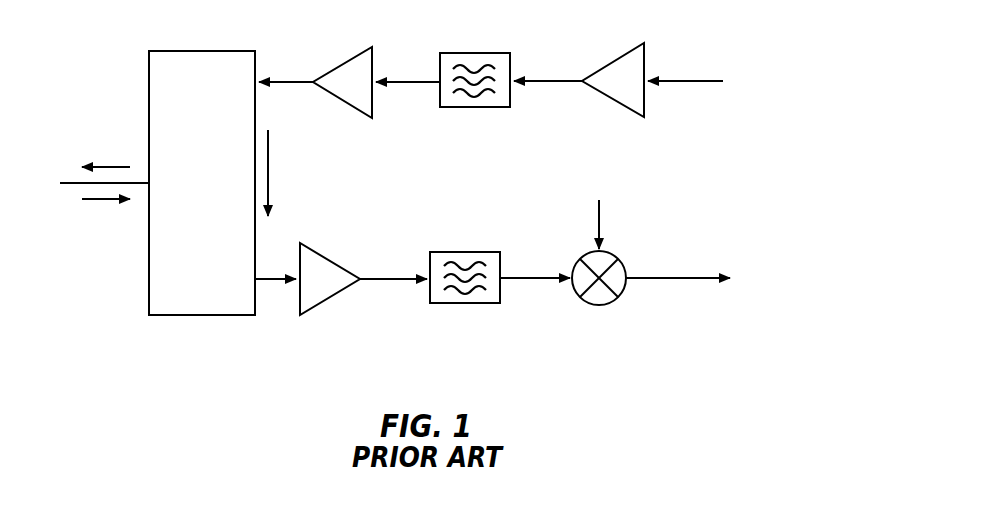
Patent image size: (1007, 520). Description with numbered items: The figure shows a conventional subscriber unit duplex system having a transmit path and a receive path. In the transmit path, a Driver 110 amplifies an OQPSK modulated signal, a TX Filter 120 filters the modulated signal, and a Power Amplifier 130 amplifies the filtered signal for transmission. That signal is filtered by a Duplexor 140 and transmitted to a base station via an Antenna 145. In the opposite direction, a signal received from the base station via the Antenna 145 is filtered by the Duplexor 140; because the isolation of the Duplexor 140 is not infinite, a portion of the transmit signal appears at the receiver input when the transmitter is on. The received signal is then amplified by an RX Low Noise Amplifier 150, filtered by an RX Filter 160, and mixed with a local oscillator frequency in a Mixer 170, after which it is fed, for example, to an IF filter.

The Driver 110 is at (620, 56).
The TX Filter 120 is at (485, 53).
The Power Amplifier (PA) 130 is at (350, 57).
The Duplexor 140 is at (200, 50).
The Antenna 145 is at (66, 184).
The RX Low Noise Amplifier (LNA) 150 is at (325, 300).
The RX Filter 160 is at (452, 303).
The Mixer 170 is at (608, 303).